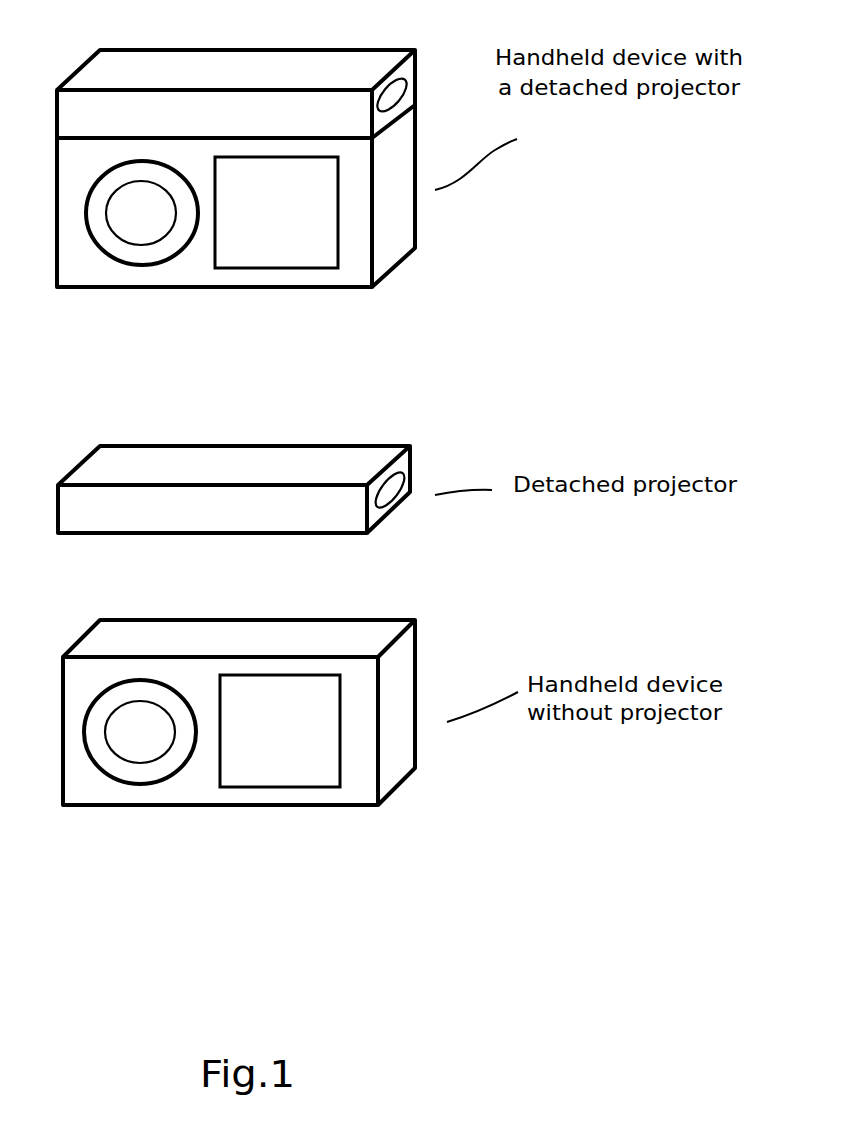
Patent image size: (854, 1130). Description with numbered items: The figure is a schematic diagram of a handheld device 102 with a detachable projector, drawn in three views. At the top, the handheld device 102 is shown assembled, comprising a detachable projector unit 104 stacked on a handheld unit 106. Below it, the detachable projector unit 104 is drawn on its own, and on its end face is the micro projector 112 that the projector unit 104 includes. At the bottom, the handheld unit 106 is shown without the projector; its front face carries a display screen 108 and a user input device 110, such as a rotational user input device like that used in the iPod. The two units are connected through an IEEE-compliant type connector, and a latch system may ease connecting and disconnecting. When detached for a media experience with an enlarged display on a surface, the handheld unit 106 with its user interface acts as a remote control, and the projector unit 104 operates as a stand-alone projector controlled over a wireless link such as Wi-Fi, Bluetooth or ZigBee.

The handheld device 102 is at (236, 144).
The detachable projector unit 104 is at (275, 482).
The handheld unit 106 is at (239, 687).
The display screen 108 is at (280, 731).
The user input device 110 is at (140, 732).
The micro projector 112 is at (401, 499).